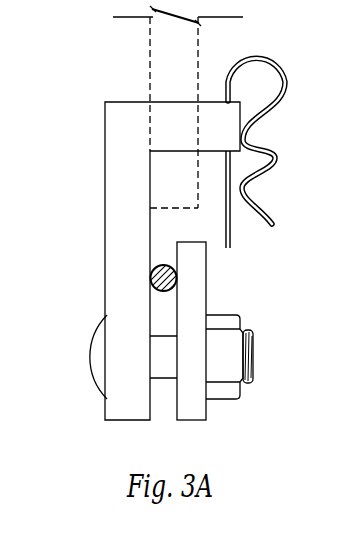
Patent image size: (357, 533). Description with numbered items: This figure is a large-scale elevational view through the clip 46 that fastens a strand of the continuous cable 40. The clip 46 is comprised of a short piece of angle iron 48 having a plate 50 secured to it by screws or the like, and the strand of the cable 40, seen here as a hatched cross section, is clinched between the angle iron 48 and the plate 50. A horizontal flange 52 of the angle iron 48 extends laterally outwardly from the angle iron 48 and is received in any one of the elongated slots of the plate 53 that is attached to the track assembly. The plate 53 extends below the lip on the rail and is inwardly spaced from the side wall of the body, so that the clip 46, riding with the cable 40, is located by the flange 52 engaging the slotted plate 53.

The clip 46 is at (164, 213).
The angle iron 48 is at (105, 191).
The horizontal flange 52 is at (173, 101).
The plate 53 is at (150, 42).
The cable 40 is at (152, 268).
The plate 50 is at (207, 278).